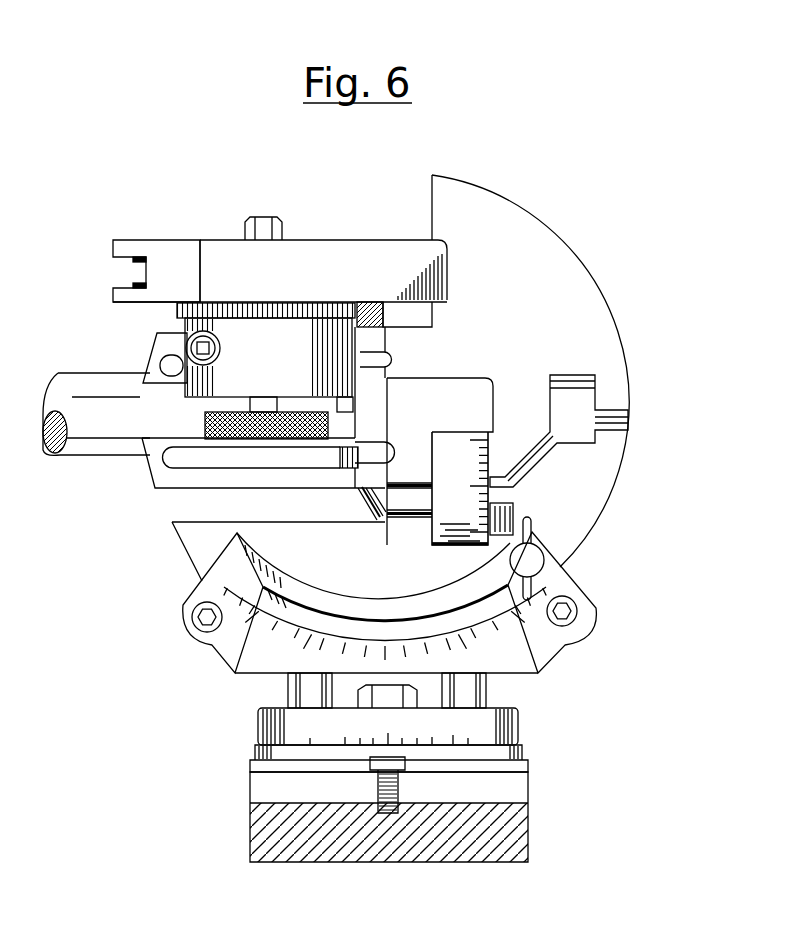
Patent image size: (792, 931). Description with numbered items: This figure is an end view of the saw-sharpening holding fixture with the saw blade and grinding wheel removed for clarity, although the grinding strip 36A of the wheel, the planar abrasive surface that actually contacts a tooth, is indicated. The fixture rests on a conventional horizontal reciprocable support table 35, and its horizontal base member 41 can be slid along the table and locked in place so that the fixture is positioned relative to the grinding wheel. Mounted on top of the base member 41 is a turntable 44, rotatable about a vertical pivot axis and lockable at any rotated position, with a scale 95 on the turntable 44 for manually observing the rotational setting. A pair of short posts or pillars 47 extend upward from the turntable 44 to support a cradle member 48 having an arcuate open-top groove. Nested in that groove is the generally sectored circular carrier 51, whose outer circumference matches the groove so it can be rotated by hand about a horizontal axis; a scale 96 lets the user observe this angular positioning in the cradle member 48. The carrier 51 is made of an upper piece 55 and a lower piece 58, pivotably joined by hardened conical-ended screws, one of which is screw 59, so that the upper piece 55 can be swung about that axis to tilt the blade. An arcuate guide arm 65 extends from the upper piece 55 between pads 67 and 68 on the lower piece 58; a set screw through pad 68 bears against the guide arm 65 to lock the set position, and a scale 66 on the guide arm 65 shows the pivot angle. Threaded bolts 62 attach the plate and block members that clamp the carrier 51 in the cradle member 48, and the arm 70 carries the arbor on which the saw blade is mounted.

The horizontal reciprocable support table 35 is at (535, 832).
The horizontal base member 41 is at (532, 758).
The turntable 44 is at (520, 722).
The posts or pillars 47 is at (288, 687).
The cradle member 48 is at (557, 645).
The carrier 51 is at (600, 275).
The upper piece 55 is at (507, 193).
The lower piece 58 is at (623, 458).
The conical-ended screw 59 is at (628, 418).
The threaded bolts 62 is at (192, 610).
The arcuate guide arm 65 is at (452, 543).
The scale 66 is at (478, 460).
The pad 67 is at (513, 507).
The pad 68 is at (383, 532).
The arm 70 is at (142, 240).
The scale 95 is at (343, 738).
The scale 96 is at (413, 645).
The grinding strip 36A is at (387, 408).